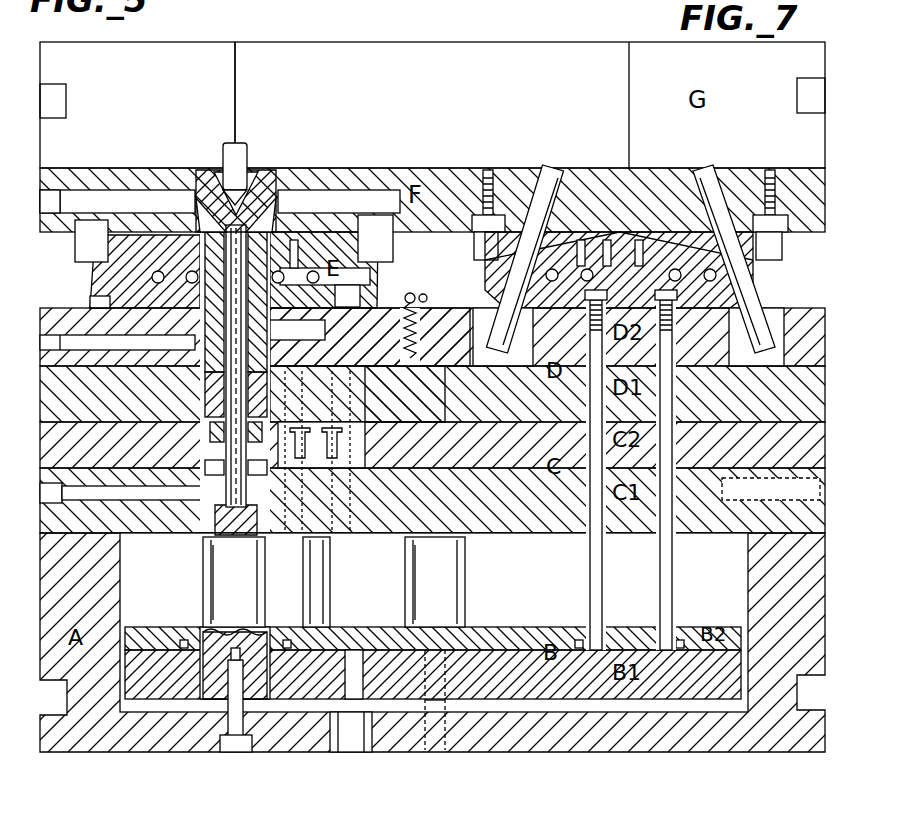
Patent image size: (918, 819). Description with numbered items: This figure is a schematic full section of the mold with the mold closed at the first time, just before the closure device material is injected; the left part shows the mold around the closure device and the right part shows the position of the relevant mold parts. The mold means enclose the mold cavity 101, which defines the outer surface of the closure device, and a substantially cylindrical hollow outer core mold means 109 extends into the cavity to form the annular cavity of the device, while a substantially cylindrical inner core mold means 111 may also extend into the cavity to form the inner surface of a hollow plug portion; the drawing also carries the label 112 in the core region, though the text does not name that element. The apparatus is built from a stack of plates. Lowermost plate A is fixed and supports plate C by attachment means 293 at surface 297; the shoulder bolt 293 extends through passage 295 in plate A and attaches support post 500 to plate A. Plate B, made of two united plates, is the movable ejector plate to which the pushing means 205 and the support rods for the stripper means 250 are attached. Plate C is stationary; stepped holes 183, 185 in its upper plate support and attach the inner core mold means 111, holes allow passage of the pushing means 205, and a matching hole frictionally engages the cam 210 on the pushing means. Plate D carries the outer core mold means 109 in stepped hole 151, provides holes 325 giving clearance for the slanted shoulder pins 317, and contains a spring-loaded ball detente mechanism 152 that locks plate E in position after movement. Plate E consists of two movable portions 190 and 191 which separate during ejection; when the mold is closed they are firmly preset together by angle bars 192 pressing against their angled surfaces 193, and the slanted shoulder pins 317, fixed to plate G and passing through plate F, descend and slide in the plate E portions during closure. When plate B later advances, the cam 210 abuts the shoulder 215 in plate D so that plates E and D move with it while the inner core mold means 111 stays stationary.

The mold cavity 101 is at (250, 170).
The outer core mold means 109 is at (370, 337).
The inner core mold means 111 is at (222, 412).
The plate 112 is at (225, 392).
The stepped hole 151 is at (212, 372).
The detente mechanism 152 is at (423, 295).
The stepped hole 183 is at (208, 468).
The stepped hole 185 is at (218, 434).
The plate E portion 190 is at (92, 290).
The plate E portion 191 is at (394, 262).
The angle bars 192 is at (76, 240).
The angled surfaces 193 is at (100, 235).
The pushing means 205 is at (322, 602).
The cam 210 is at (362, 448).
The shoulder 215 is at (405, 394).
The stripper means 250 is at (640, 240).
The shoulder bolt 293 is at (224, 745).
The passage 295 is at (212, 745).
The surface 297 is at (262, 735).
The slanted shoulder pin 317 is at (520, 178).
The holes 325 is at (414, 302).
The support post 500 is at (170, 752).